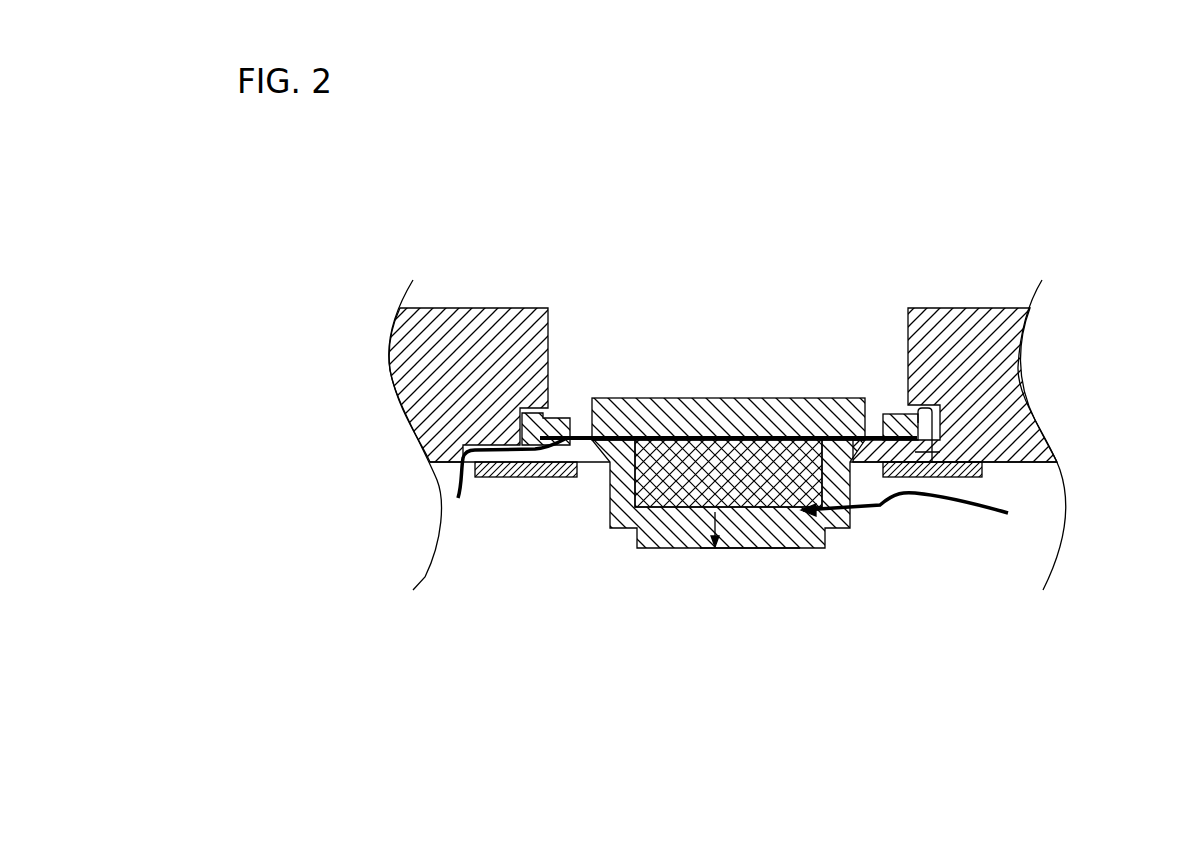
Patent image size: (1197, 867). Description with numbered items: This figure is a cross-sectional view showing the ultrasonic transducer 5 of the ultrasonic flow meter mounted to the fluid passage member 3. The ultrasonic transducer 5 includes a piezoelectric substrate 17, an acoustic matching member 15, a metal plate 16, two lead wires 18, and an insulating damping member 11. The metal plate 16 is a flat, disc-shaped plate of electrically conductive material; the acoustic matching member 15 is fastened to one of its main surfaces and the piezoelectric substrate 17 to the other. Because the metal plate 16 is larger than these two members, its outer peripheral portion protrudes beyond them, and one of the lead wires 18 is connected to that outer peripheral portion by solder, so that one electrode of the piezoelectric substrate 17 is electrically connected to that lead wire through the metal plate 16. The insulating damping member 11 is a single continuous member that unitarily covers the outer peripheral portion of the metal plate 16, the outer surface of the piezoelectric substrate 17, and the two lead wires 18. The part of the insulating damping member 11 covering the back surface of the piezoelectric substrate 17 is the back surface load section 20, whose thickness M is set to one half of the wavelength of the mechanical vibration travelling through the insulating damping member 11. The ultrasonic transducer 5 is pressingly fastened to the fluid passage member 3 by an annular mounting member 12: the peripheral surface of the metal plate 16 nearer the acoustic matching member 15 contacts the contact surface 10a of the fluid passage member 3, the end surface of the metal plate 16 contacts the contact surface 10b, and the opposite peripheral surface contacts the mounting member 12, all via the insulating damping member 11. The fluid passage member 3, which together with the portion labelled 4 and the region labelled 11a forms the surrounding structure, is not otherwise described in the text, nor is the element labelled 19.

The fluid passage member 3 is at (1000, 363).
The case 4 is at (833, 338).
The ultrasonic transducer 5 is at (725, 386).
The contact surface 10a is at (907, 413).
The contact surface 10b is at (930, 408).
The insulating damping member 11 is at (795, 537).
The housing upper portion 11a is at (1025, 440).
The mounting member 12 is at (980, 472).
The acoustic matching member 15 is at (665, 410).
The metal plate 16 is at (635, 440).
The piezoelectric substrate 17 is at (637, 504).
The lead wires 18 is at (457, 477).
The electrode sheet 19 is at (587, 435).
The back surface load section 20 is at (747, 548).
The thickness M is at (712, 535).